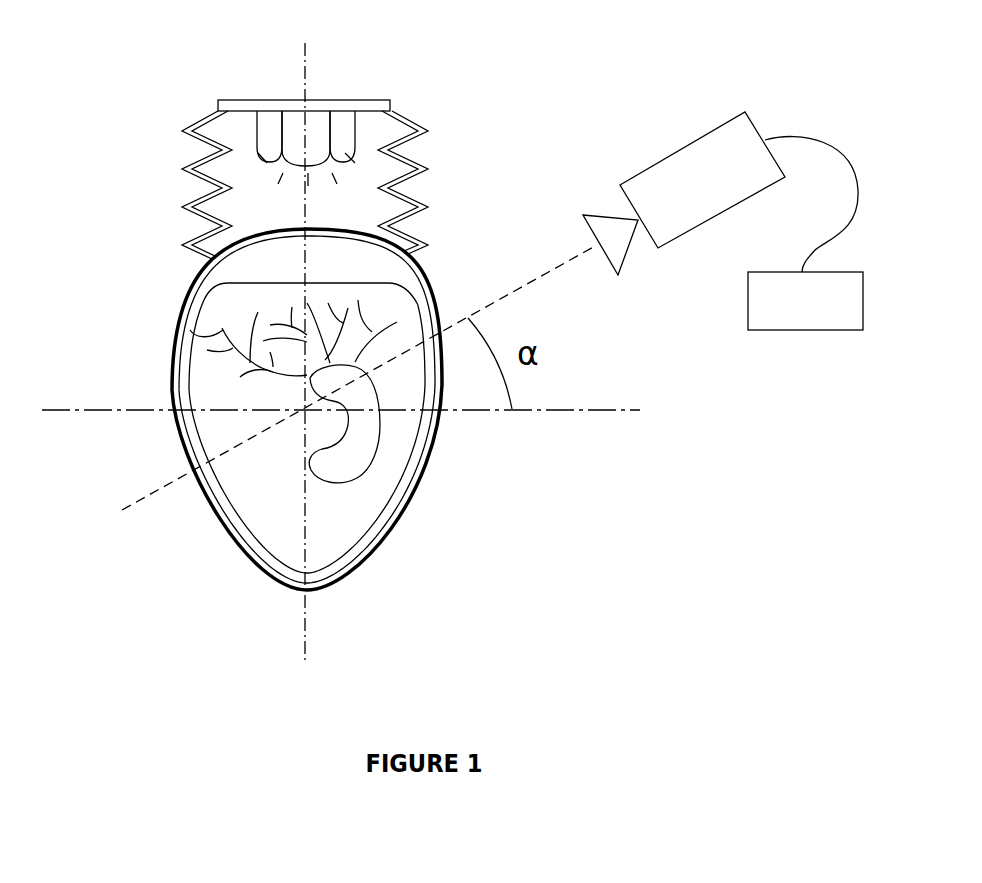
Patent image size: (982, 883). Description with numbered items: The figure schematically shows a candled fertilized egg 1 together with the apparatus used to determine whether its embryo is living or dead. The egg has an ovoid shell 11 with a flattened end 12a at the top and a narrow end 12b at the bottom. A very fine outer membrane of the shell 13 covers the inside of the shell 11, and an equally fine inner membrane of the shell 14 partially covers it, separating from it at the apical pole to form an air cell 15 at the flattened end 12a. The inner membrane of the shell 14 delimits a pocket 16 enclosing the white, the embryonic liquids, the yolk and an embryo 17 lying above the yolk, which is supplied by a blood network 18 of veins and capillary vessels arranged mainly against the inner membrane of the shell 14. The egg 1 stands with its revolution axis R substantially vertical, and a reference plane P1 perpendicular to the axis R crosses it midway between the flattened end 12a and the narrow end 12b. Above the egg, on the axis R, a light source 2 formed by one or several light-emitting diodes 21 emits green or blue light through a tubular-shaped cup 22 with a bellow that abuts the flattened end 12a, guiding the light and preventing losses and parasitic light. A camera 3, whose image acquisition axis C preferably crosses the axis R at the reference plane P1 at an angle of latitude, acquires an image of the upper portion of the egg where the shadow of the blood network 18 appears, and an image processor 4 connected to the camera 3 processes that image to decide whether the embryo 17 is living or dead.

The fertilized egg 1 is at (287, 405).
The shell 11 is at (175, 402).
The flattened end 12a is at (303, 231).
The narrow end 12b is at (320, 590).
The outer membrane of the shell 13 is at (207, 281).
The inner membrane of the shell 14 is at (212, 519).
The air cell 15 is at (280, 262).
The pocket 16 is at (176, 428).
The embryo 17 is at (360, 447).
The blood network 18 is at (222, 332).
The light source 2 is at (294, 159).
The light-emitting diodes 21 is at (320, 118).
The tubular-shaped cup 22 is at (410, 125).
The camera 3 is at (677, 150).
The image processor 4 is at (748, 307).
The revolution axis R is at (307, 52).
The image acquisition axis C is at (527, 282).
The reference plane P1 is at (598, 412).